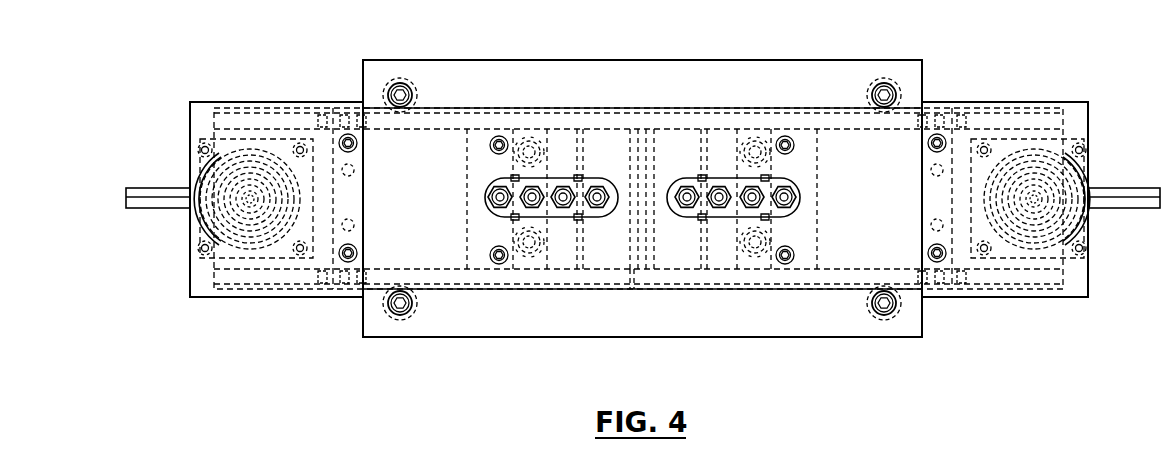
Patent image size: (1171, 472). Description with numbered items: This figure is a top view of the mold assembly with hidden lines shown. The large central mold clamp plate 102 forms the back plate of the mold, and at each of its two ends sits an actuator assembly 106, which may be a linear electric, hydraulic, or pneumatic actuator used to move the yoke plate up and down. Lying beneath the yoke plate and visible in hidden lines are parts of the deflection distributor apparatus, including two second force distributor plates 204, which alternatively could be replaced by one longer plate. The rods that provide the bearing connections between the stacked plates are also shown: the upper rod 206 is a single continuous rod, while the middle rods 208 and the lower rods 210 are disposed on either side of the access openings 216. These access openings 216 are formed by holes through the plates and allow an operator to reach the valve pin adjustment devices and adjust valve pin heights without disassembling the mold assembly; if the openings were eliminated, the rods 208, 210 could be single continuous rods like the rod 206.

The mold clamp plate 102 is at (428, 73).
The actuator assembly 106 is at (200, 176).
The second force distributor plate 204 is at (473, 251).
The upper rod 206 is at (632, 270).
The middle rod 208 is at (531, 136).
The lower rod 210 is at (497, 136).
The access opening 216 is at (594, 176).